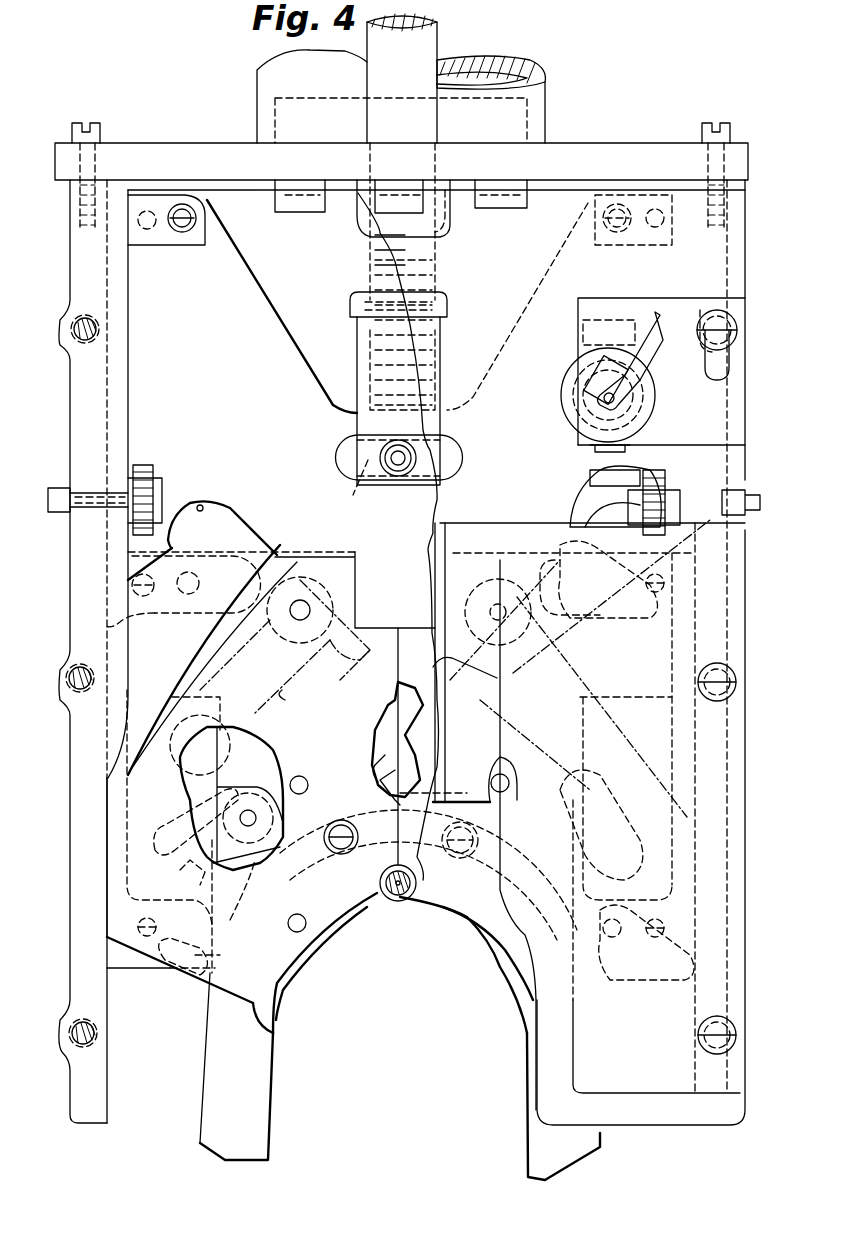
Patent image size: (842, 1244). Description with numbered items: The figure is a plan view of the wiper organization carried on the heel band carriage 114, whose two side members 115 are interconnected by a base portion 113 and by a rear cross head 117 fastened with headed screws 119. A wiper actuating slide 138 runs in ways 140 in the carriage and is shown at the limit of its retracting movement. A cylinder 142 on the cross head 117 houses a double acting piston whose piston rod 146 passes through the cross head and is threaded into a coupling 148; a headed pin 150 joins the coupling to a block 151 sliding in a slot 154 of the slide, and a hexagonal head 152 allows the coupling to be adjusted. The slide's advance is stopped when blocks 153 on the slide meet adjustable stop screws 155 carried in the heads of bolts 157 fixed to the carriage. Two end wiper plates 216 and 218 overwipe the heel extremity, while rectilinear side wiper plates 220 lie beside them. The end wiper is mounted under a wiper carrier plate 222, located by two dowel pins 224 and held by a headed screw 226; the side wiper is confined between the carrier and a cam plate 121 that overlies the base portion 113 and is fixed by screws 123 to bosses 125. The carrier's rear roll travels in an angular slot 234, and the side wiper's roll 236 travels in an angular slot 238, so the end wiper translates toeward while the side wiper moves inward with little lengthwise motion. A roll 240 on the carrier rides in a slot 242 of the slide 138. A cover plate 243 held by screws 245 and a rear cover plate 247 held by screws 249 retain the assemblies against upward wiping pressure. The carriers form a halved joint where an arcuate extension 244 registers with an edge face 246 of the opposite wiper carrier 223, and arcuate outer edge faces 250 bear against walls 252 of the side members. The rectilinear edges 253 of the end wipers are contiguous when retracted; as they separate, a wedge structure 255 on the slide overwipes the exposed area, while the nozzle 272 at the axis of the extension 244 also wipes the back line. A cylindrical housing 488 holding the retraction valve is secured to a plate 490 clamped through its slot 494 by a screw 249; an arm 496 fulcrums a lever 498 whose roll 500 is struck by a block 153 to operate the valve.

The base portion 113 is at (227, 906).
The heel band carriage 114 is at (128, 99).
The side members 115 is at (70, 556).
The cross head 117 is at (608, 152).
The headed screws 119 is at (72, 132).
The cam plate 121 is at (130, 670).
The screws 123 is at (155, 598).
The bosses 125 is at (205, 570).
The wiper actuating slide 138 is at (262, 298).
The ways 140 is at (110, 300).
The cylinder 142 is at (545, 108).
The piston rod 146 is at (437, 42).
The coupling 148 is at (357, 358).
The headed pin 150 is at (398, 470).
The block 151 is at (366, 494).
The hexagonal head 152 is at (350, 308).
The blocks 153 is at (205, 232).
The slot 154 is at (350, 457).
The adjustable stop screws 155 is at (145, 468).
The bolts 157 is at (160, 500).
The end wiper plate 216 is at (300, 975).
The end wiper plate 218 is at (512, 995).
The side wiper plates 220 is at (262, 1100).
The wiper carrier plate 222 is at (275, 1033).
The wiper carrier 223 is at (507, 958).
The dowel pins 224 is at (299, 776).
The headed screw 226 is at (341, 855).
The angular slot 234 is at (290, 690).
The roll 236 is at (223, 823).
The angular slot 238 is at (205, 872).
The roll 240 is at (307, 577).
The slot 242 is at (230, 513).
The cover plate 243 is at (430, 591).
The arcuate extension 244 is at (392, 900).
The screws 245 is at (70, 684).
The edge face 246 is at (410, 895).
The cover plate 247 is at (428, 500).
The screws 249 is at (72, 330).
The outer edge faces 250 is at (107, 808).
The walls 252 is at (108, 780).
The rectilinear edges 253 is at (373, 775).
The wedge structure 255 is at (397, 743).
The nozzle 272 is at (395, 880).
The cylindrical housing 488 is at (565, 418).
The plate 490 is at (578, 316).
The slot 494 is at (729, 368).
The arm 496 is at (585, 368).
The lever 498 is at (580, 465).
The roll 500 is at (590, 480).